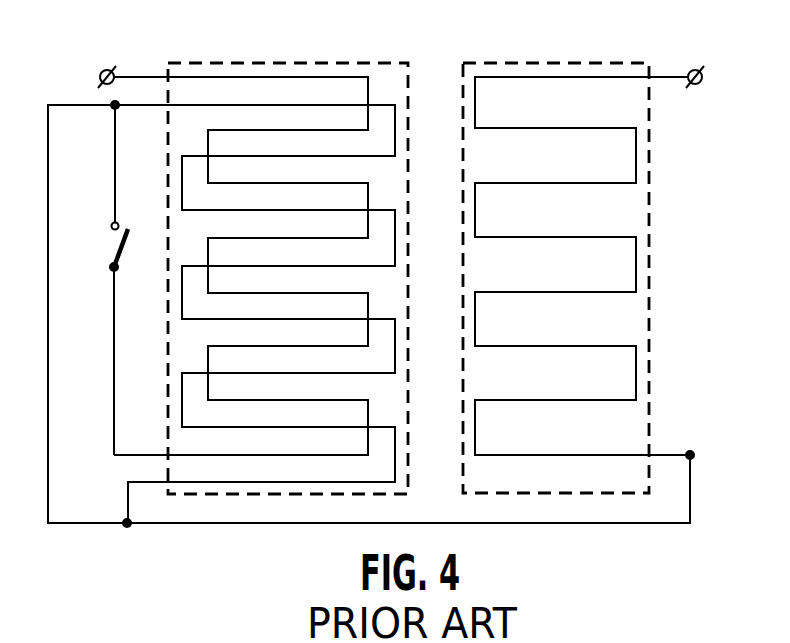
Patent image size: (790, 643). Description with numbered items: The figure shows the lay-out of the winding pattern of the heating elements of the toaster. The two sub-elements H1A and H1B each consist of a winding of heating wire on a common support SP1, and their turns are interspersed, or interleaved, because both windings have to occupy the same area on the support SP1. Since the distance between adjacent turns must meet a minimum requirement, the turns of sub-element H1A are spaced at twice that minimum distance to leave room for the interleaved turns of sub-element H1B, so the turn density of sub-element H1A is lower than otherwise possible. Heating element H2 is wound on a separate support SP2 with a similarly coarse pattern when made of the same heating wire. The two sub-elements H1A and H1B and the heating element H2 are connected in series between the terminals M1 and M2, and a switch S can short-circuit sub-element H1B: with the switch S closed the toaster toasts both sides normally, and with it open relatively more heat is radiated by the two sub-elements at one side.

The terminal M1 is at (105, 66).
The terminal M2 is at (697, 68).
The heating sub-element H1A is at (197, 74).
The heating sub-element H1B is at (383, 102).
The heating element H2 is at (514, 74).
The switch S is at (111, 247).
The support SP1 is at (217, 496).
The support SP2 is at (570, 495).